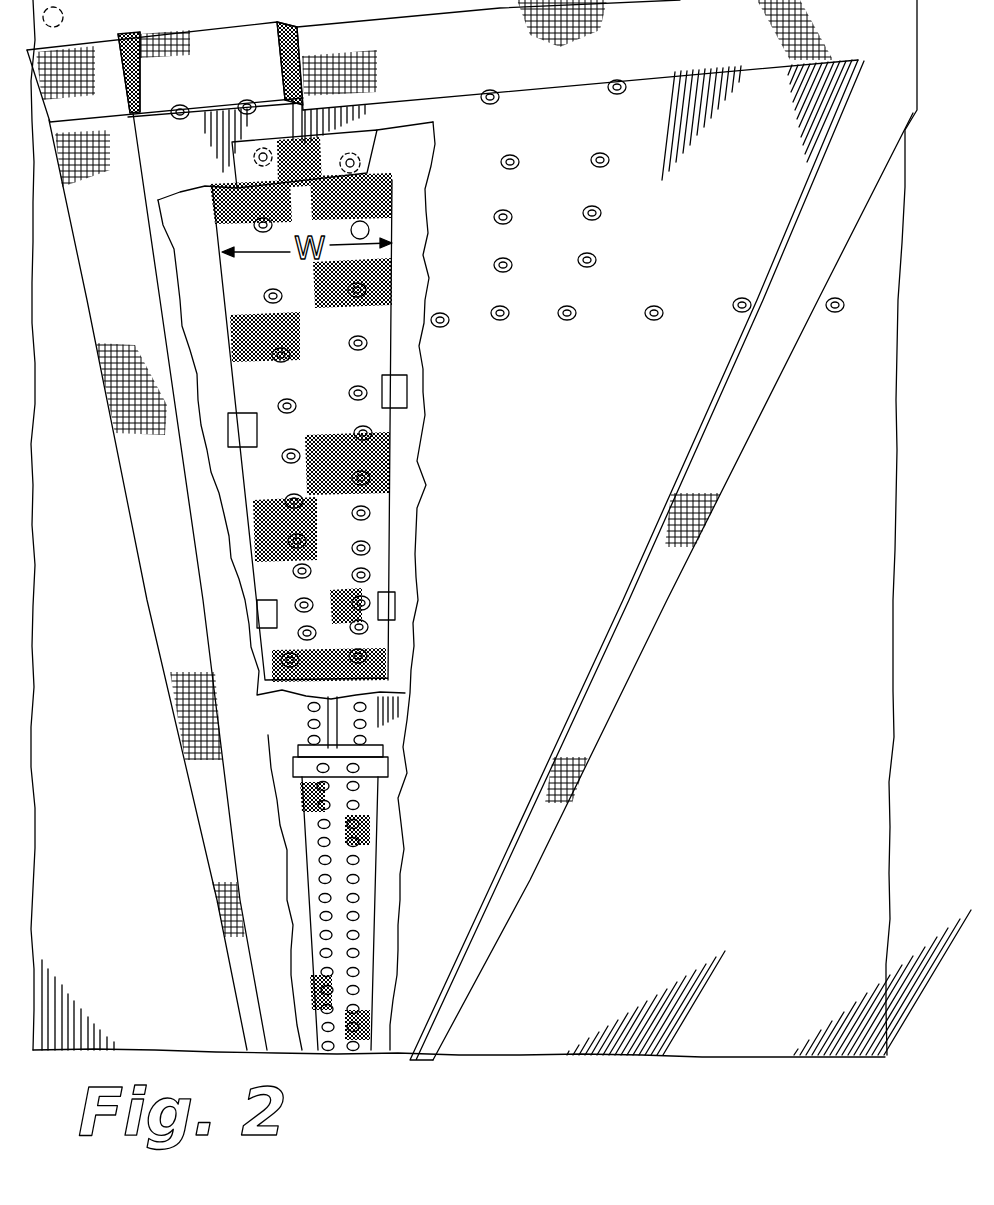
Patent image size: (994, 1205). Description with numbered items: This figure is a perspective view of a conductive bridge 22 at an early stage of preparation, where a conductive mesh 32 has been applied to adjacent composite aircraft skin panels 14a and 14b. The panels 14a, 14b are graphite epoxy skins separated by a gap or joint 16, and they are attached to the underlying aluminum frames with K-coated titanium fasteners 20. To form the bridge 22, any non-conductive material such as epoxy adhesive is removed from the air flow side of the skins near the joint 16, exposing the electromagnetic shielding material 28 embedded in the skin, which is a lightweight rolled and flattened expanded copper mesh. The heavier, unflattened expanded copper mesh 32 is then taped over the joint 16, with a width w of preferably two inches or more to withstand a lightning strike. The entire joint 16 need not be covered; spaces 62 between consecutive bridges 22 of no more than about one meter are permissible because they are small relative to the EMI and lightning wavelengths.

The adjacent panel 14a is at (560, 598).
The adjacent panel 14b is at (165, 180).
The joint 16 is at (303, 118).
The K-coated titanium fastener 20 is at (262, 292).
The bridge 22 is at (404, 513).
The electromagnetic shielding material 28 is at (407, 426).
The conductive mesh 32 is at (378, 315).
The space 62 is at (280, 717).